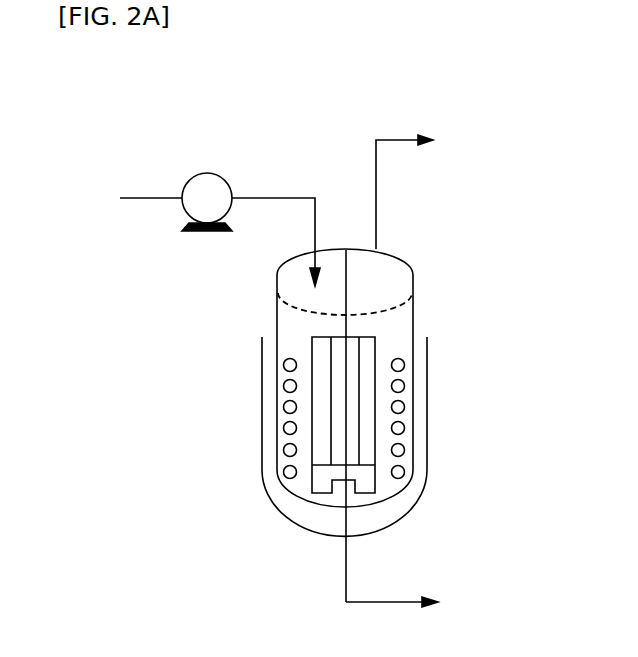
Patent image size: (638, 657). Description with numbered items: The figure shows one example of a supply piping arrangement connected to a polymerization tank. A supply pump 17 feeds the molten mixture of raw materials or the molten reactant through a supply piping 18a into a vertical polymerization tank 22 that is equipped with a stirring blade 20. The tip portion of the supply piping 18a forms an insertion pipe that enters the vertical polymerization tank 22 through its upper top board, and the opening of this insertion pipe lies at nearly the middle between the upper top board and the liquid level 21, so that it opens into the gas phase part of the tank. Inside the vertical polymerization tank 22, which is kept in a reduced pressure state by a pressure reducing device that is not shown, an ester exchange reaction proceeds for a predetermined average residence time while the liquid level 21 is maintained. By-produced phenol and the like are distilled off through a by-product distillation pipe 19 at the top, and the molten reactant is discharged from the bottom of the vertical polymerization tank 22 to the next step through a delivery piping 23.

The supply pump 17 is at (193, 175).
The supply piping 18a is at (290, 198).
The by-product distillation pipe 19 is at (400, 140).
The stirring blade 20 is at (325, 363).
The liquid level 21 is at (383, 310).
The vertical polymerization tank 22 is at (298, 528).
The delivery piping 23 is at (423, 607).